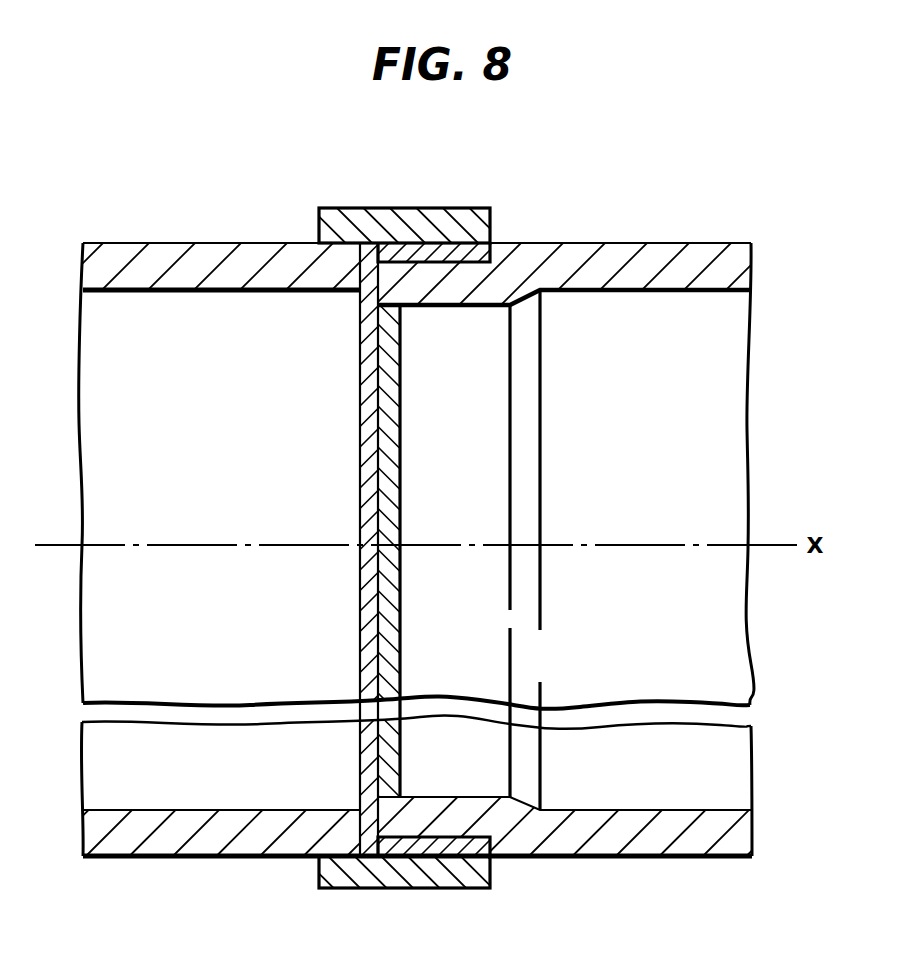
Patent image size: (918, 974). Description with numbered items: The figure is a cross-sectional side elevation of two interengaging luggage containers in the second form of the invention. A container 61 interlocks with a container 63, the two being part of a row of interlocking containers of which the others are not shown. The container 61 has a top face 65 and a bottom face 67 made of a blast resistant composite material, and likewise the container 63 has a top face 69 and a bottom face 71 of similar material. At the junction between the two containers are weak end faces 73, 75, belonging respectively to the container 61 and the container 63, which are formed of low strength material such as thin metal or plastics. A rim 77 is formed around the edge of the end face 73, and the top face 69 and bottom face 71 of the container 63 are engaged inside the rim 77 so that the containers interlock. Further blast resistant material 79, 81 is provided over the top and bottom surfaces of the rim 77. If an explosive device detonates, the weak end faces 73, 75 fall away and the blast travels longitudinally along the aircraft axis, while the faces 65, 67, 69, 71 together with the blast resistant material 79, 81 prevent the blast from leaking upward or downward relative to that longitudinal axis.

The container 61 is at (229, 527).
The container 63 is at (627, 521).
The top face 65 is at (186, 258).
The bottom face 67 is at (185, 835).
The top face 69 is at (697, 262).
The bottom face 71 is at (639, 837).
The end face 73 is at (368, 613).
The end face 75 is at (393, 596).
The rim 77 is at (431, 250).
The blast resistant material 79 is at (350, 220).
The blast resistant material 81 is at (413, 868).